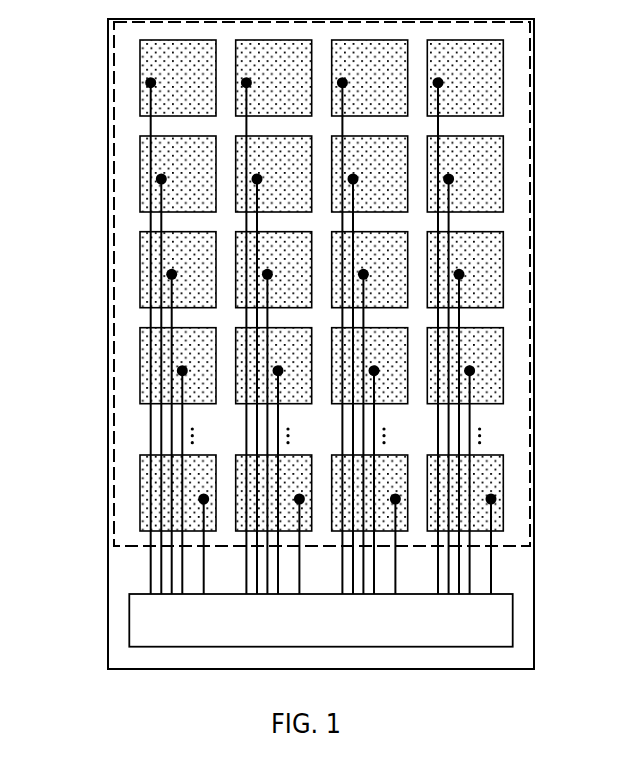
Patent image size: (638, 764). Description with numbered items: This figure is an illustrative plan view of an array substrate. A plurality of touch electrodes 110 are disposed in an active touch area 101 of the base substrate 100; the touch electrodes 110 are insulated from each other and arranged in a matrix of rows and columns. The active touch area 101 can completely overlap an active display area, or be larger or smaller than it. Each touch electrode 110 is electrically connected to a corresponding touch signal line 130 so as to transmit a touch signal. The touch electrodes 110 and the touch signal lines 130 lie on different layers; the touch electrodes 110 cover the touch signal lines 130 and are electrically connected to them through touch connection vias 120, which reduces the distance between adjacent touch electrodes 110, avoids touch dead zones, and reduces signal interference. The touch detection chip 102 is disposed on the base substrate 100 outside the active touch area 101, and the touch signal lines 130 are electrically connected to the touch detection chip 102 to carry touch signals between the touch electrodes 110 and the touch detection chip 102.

The base substrate 100 is at (108, 397).
The active touch area 101 is at (135, 439).
The touch detection chip 102 is at (475, 624).
The touch electrode 110 is at (476, 62).
The touch connection via 120 is at (438, 84).
The touch signal line 130 is at (449, 221).